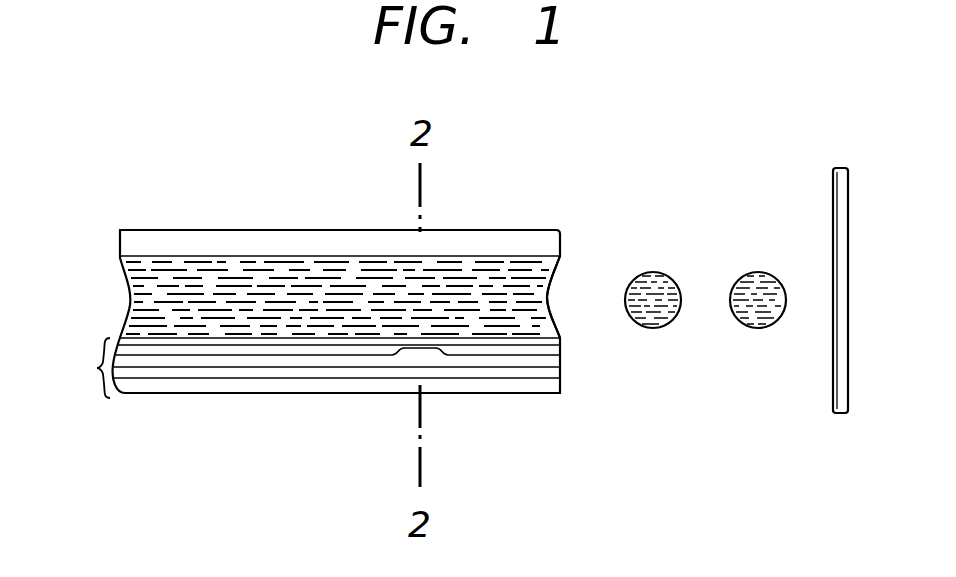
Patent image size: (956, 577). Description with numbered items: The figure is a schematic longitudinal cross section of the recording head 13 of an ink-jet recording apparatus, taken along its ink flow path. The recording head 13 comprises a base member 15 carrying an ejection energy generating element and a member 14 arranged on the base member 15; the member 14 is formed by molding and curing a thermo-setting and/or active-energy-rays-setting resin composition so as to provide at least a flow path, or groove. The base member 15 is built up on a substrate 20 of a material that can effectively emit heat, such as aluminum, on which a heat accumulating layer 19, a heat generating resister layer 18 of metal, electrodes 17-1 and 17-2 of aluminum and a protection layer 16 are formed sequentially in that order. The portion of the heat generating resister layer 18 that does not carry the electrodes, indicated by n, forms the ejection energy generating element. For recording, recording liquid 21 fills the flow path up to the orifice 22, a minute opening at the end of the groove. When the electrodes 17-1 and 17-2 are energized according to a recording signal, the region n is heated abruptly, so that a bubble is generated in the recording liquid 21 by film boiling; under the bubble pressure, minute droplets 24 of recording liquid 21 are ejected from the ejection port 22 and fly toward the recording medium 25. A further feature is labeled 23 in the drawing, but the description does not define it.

The recording head 13 is at (213, 231).
The member 14 is at (270, 257).
The recording liquid 21 is at (163, 265).
The region of the heat generating resister layer n is at (440, 330).
The base member 15 is at (85, 368).
The protection layer 16 is at (157, 345).
The electrode 17-1 is at (213, 358).
The electrode 17-2 is at (517, 355).
The heat generating resister layer 18 is at (263, 363).
The heat accumulating layer 19 is at (320, 375).
The substrate 20 is at (390, 390).
The orifice 22 is at (570, 325).
The upper side edge 23 is at (553, 282).
The droplets 24 is at (788, 263).
The recording medium 25 is at (833, 210).